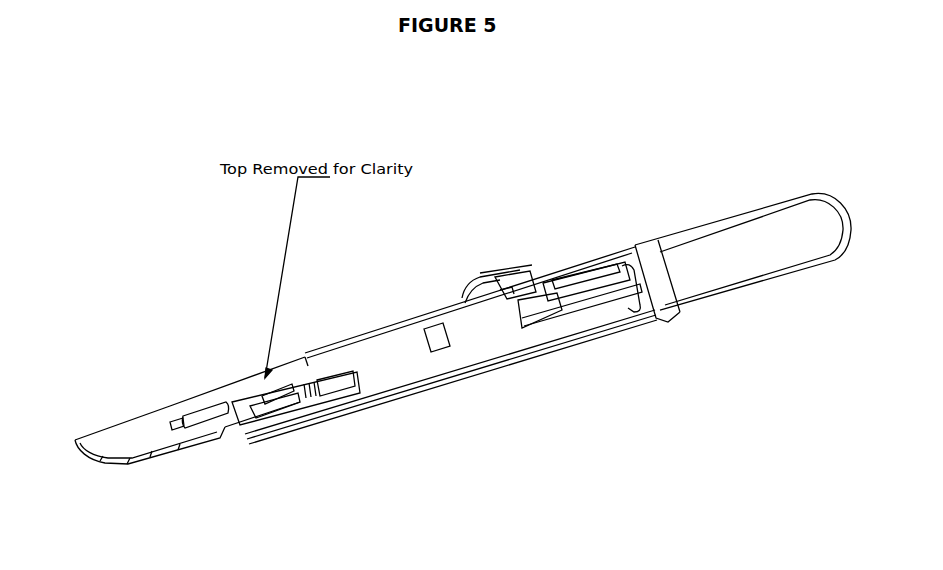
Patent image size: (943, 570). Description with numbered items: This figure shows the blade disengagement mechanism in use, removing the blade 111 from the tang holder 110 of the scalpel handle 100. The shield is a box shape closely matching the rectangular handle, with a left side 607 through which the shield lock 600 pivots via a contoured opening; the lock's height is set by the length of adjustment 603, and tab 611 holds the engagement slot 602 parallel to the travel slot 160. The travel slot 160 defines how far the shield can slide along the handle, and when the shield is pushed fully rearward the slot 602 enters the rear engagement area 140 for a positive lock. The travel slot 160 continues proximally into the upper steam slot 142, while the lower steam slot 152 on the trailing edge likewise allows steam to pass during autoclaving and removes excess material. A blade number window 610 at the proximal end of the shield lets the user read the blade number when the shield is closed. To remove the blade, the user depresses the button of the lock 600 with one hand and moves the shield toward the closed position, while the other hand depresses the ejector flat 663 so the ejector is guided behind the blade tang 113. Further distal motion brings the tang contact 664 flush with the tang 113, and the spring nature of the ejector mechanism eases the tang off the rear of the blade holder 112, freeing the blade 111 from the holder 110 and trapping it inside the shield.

The handle 100 is at (737, 254).
The tang holder 110 is at (199, 405).
The blade 111 is at (124, 437).
The blade holder 112 is at (239, 382).
The tang 113 is at (287, 405).
The rear engagement area 140 is at (572, 285).
The upper steam slot 142 is at (600, 282).
The lower steam slot 152 is at (648, 308).
The travel slot 160 is at (540, 302).
The shield lock 600 is at (502, 268).
The engagement slot 602 is at (514, 318).
The adjustment 603 is at (472, 279).
The left side 607 is at (356, 348).
The blade number window 610 is at (433, 335).
The tab 611 is at (515, 282).
The ejector flat 663 is at (328, 390).
The tang contact 664 is at (290, 383).